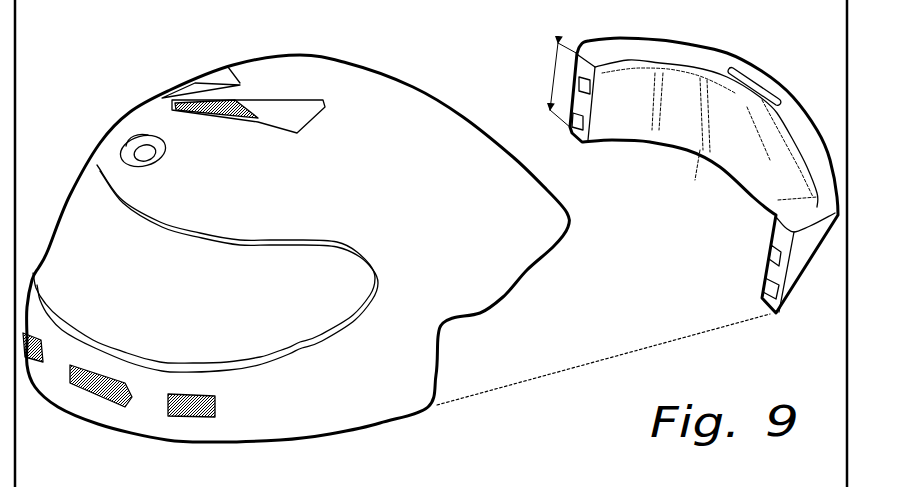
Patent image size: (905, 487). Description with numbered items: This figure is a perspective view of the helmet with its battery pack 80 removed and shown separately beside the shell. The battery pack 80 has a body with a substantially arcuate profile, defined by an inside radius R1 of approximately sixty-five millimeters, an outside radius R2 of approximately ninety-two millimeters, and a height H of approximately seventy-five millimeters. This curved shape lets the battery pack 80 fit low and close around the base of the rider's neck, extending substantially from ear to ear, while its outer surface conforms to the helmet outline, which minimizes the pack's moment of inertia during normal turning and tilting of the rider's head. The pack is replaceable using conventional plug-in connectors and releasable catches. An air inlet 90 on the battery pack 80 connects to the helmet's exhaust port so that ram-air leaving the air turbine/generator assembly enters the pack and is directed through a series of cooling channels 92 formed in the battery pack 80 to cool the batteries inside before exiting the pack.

The battery pack 80 is at (638, 46).
The cooling channels 92 is at (693, 80).
The air inlet 90 is at (747, 60).
The height H is at (564, 85).
The inside radius R1 is at (722, 172).
The outside radius R2 is at (776, 80).